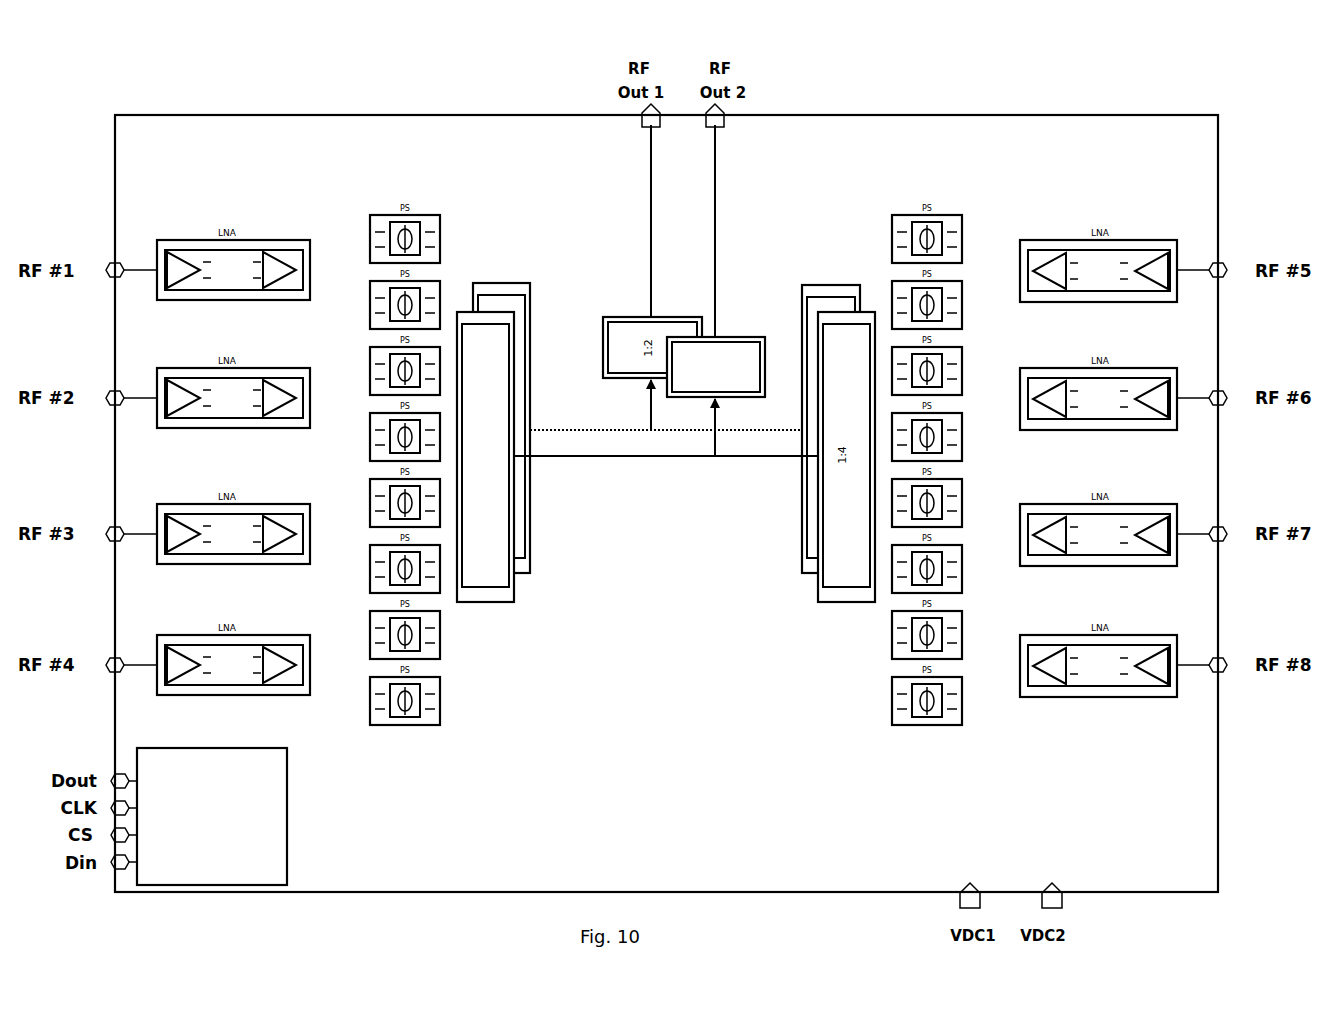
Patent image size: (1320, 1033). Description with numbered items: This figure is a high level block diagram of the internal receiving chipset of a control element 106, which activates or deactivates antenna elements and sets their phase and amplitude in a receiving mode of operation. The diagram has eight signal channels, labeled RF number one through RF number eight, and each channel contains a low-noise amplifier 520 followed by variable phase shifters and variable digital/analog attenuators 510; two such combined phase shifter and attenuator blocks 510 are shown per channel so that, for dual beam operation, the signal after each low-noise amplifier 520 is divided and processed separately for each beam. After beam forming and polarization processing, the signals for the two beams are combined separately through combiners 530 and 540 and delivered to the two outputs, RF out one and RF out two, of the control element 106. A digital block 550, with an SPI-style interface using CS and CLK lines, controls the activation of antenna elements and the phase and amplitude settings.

The control element 106 is at (141, 101).
The variable phase shifter and variable digital/analog attenuator 510 is at (366, 208).
The low-noise amplifier 520 is at (183, 233).
The combiner 530 is at (514, 279).
The combiner 540 is at (736, 332).
The digital block 550 is at (299, 804).